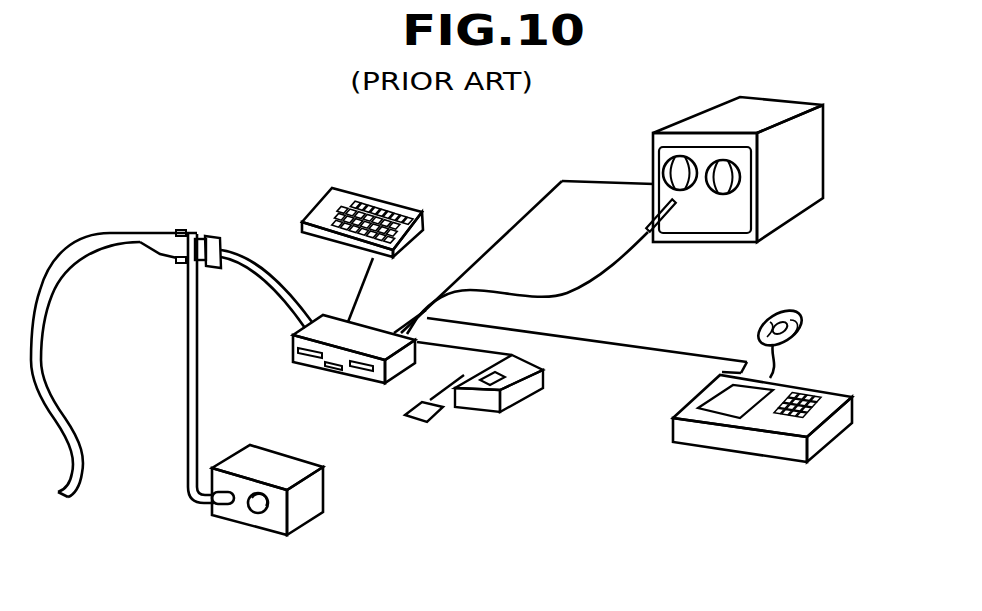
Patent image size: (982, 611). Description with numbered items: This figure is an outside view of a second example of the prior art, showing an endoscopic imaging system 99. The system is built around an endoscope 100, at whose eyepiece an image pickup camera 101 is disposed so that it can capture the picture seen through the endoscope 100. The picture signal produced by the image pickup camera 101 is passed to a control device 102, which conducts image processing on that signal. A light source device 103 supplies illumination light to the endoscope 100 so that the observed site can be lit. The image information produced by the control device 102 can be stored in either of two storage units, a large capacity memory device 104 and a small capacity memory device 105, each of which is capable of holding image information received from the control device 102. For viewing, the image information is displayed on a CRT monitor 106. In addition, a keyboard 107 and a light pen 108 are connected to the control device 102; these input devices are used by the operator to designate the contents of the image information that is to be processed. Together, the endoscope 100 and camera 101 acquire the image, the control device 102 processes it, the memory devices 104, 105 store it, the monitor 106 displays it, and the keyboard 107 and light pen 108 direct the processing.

The endoscopic imaging system 99 is at (597, 126).
The endoscope 100 is at (97, 230).
The image pickup camera 101 is at (219, 236).
The control device 102 is at (372, 320).
The light source device 103 is at (307, 458).
The large capacity memory device 104 is at (728, 452).
The small capacity memory device 105 is at (483, 412).
The CRT monitor 106 is at (790, 105).
The keyboard 107 is at (394, 207).
The light pen 108 is at (670, 218).